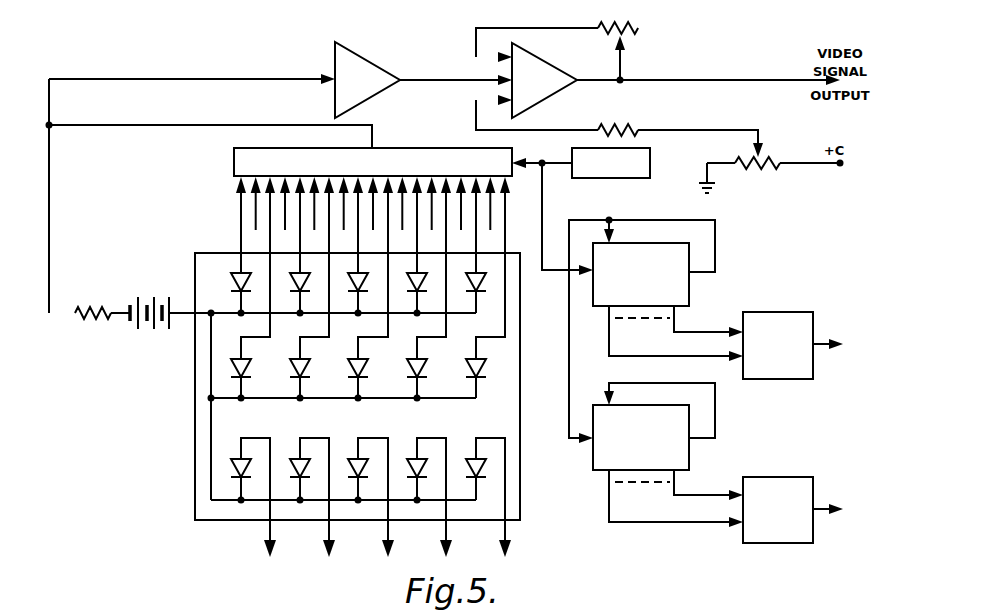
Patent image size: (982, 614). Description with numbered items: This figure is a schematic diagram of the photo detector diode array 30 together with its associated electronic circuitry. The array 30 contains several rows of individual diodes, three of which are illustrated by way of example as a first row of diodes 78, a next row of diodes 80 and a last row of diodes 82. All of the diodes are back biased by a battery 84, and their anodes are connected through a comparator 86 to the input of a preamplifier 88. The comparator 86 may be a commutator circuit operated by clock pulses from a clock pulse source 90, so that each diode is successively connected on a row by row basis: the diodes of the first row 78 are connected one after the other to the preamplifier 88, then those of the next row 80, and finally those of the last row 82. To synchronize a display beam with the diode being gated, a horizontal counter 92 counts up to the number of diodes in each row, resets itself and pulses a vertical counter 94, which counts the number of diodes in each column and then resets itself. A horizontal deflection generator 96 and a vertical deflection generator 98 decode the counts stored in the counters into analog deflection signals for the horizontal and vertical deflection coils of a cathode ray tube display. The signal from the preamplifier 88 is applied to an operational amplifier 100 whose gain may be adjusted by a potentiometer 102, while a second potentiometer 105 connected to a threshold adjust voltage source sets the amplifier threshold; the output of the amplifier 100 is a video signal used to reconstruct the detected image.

The photo detector diode array 30 is at (209, 243).
The first row of diodes 78 is at (216, 283).
The next row of diodes 80 is at (216, 371).
The last row of diodes 82 is at (216, 469).
The battery 84 is at (148, 330).
The comparator 86 is at (233, 163).
The preamplifier 88 is at (367, 53).
The clock pulse source 90 is at (612, 178).
The horizontal counter 92 is at (690, 290).
The vertical counter 94 is at (690, 452).
The horizontal deflection generator 96 is at (783, 380).
The vertical deflection generator 98 is at (785, 544).
The operational amplifier 100 is at (548, 58).
The potentiometer 102 is at (625, 16).
The bias potentiometer 105 is at (757, 167).